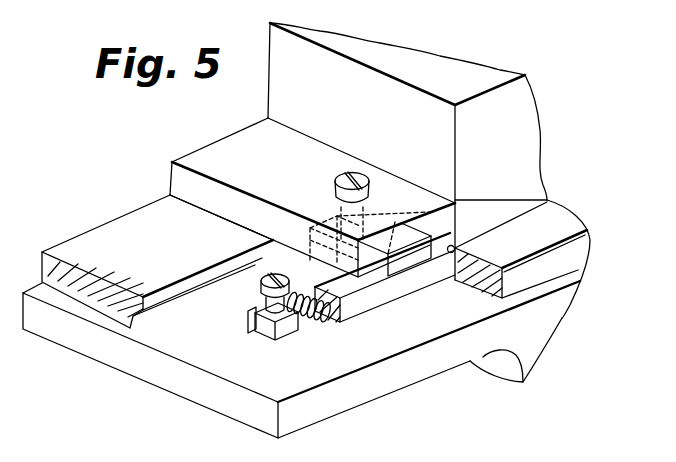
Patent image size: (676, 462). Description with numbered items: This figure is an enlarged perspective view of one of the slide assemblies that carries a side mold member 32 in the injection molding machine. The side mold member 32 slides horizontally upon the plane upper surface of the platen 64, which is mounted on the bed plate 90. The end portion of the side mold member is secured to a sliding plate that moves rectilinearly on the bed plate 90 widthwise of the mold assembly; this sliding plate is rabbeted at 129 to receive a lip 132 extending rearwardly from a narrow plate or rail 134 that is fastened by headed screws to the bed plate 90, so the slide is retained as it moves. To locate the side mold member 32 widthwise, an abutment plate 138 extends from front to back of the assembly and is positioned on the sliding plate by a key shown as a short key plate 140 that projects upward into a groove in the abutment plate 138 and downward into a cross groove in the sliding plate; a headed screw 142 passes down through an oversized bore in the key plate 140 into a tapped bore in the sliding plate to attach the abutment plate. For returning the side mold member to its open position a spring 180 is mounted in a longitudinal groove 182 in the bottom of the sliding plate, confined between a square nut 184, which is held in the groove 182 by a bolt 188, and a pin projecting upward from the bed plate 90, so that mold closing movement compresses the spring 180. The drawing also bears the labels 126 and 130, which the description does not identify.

The side mold member 32 is at (471, 65).
The platen 64 is at (120, 222).
The bed plate 90 is at (442, 357).
The top surface of guide bar 126 is at (230, 273).
The rabbet 129 is at (351, 296).
The ledge 130 is at (168, 294).
The lip 132 is at (454, 247).
The rail 134 is at (558, 215).
The abutment plate 138 is at (246, 136).
The key plate 140 is at (415, 256).
The headed screw 142 is at (359, 180).
The spring 180 is at (310, 325).
The longitudinal groove 182 is at (253, 323).
The square nut 184 is at (268, 326).
The bolt 188 is at (267, 274).